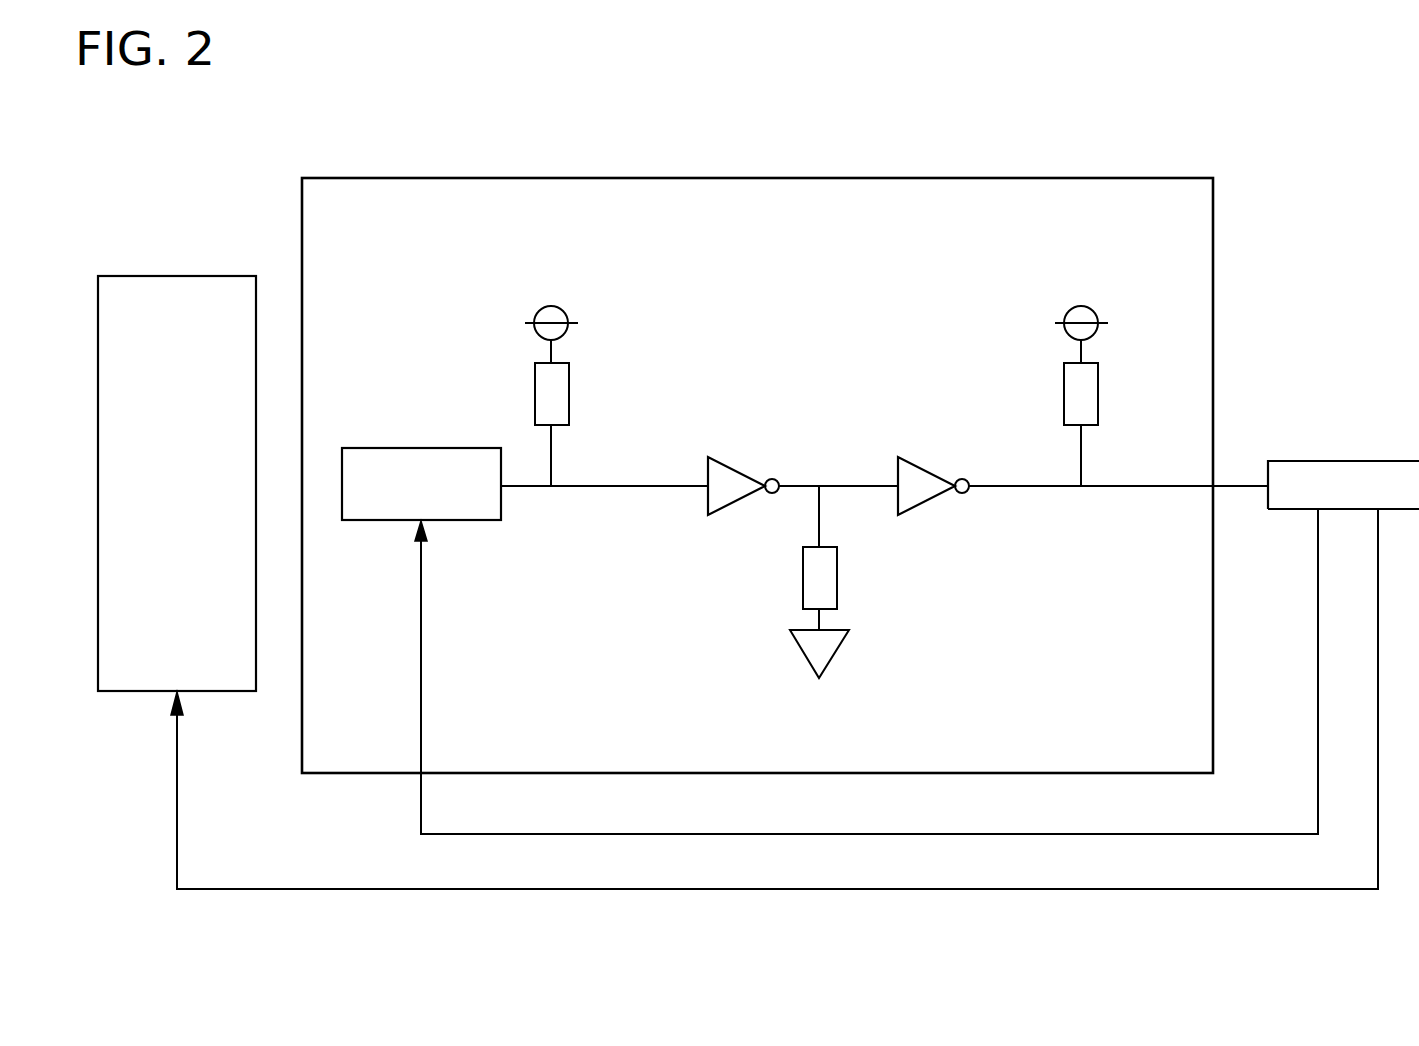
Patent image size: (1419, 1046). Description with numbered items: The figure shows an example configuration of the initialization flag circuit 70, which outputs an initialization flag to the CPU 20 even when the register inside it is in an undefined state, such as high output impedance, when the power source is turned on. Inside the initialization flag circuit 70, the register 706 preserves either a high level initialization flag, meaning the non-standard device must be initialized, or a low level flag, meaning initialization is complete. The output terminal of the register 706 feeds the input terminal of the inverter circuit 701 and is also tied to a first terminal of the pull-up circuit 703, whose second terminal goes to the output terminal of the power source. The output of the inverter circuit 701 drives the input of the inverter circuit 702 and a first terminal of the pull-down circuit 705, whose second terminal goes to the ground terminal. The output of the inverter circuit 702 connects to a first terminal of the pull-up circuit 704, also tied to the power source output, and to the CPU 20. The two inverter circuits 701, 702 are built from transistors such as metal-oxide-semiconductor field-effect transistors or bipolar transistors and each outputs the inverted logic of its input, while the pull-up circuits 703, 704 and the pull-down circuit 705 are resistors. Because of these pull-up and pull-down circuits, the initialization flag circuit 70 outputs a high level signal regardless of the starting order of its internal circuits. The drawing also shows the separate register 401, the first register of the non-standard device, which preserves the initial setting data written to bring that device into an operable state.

The CPU 20 is at (1383, 461).
The initialization flag circuit 70 is at (1152, 178).
The register 401 is at (198, 276).
The inverter circuit 701 is at (736, 468).
The inverter circuit 702 is at (927, 468).
The pull-up circuit 703 is at (570, 392).
The pull-up circuit 704 is at (1099, 392).
The pull-down circuit 705 is at (838, 577).
The register 706 is at (382, 448).